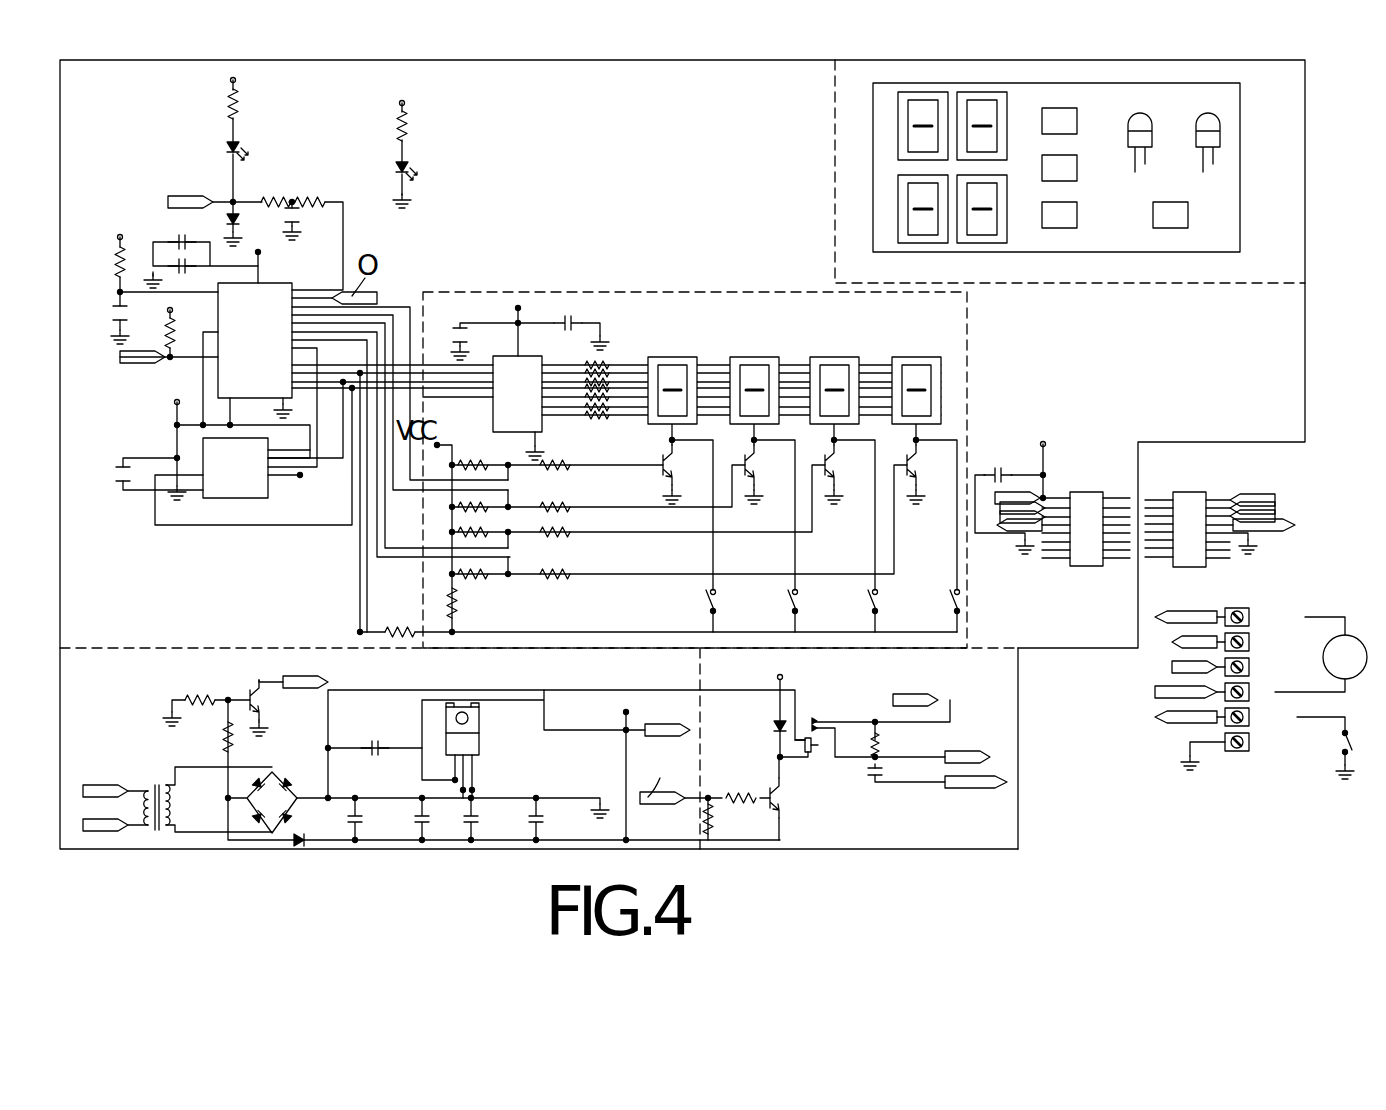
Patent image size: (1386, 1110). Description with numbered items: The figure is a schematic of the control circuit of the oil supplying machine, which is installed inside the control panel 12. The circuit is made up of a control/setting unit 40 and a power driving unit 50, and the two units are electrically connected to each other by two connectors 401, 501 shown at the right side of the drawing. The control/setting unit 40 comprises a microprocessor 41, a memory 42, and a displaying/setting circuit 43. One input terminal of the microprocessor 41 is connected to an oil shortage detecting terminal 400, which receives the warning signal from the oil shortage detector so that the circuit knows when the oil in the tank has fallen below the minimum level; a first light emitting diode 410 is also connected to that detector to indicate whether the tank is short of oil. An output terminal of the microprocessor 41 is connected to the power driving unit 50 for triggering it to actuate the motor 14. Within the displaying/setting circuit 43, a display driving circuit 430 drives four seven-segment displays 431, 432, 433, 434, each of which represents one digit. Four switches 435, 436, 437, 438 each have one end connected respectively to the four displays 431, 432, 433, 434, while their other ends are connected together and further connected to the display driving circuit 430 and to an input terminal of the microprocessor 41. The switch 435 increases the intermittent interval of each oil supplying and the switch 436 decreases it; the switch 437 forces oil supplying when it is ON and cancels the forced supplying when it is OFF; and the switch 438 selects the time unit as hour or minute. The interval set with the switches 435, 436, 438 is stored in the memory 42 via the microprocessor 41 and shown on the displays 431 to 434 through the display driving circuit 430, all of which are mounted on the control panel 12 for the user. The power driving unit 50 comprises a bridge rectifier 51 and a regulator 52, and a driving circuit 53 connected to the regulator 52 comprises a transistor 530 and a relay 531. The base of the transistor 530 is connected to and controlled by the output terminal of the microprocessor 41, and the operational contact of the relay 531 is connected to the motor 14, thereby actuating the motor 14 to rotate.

The control/setting unit 40 is at (610, 90).
The control panel 12 is at (1238, 178).
The motor 14 is at (1348, 680).
The displaying/setting circuit 43 is at (626, 296).
The microprocessor 41 is at (248, 390).
The memory 42 is at (248, 497).
The oil shortage detecting terminal 400 is at (166, 204).
The connector 401 is at (1090, 494).
The first light emitting diode 410 is at (226, 150).
The display driving circuit 430 is at (502, 434).
The seven-segment display 431 is at (686, 368).
The seven-segment display 432 is at (768, 368).
The seven-segment display 433 is at (838, 366).
The seven-segment display 434 is at (922, 366).
The switch 435 is at (1083, 118).
The switch 436 is at (1077, 216).
The switch 437 is at (1188, 216).
The switch 438 is at (1077, 170).
The power driving unit 50 is at (866, 826).
The bridge rectifier 51 is at (282, 782).
The regulator 52 is at (479, 742).
The driving circuit 53 is at (1010, 690).
The connector 501 is at (1190, 494).
The transistor 530 is at (770, 812).
The relay 531 is at (808, 724).